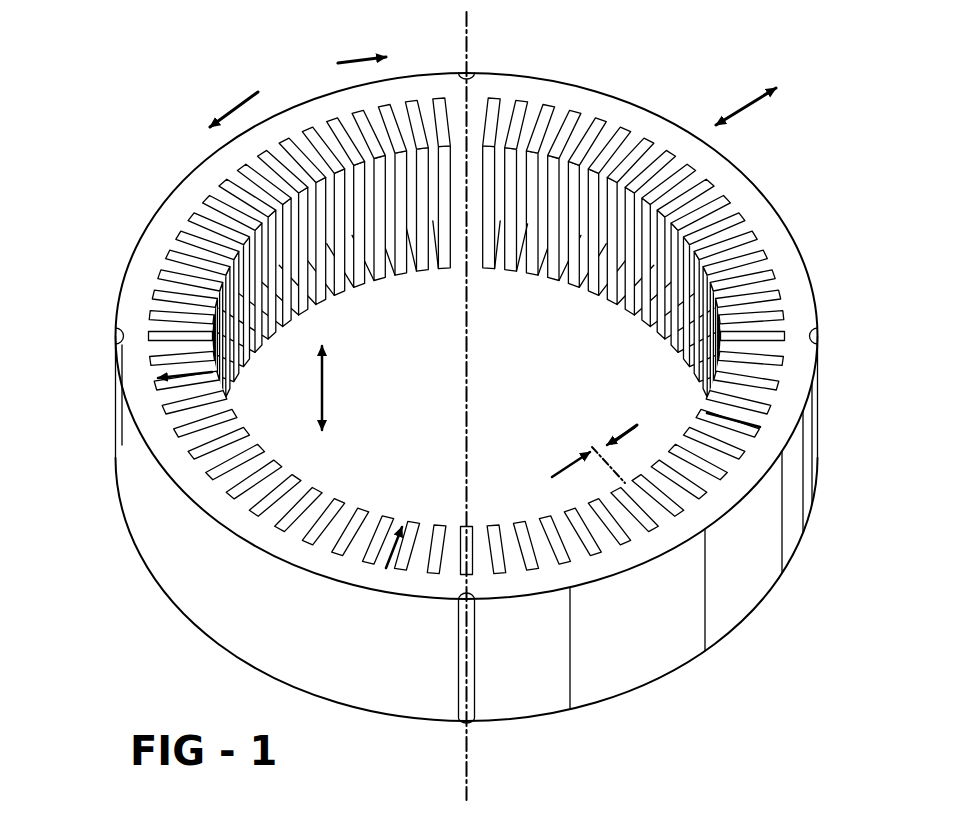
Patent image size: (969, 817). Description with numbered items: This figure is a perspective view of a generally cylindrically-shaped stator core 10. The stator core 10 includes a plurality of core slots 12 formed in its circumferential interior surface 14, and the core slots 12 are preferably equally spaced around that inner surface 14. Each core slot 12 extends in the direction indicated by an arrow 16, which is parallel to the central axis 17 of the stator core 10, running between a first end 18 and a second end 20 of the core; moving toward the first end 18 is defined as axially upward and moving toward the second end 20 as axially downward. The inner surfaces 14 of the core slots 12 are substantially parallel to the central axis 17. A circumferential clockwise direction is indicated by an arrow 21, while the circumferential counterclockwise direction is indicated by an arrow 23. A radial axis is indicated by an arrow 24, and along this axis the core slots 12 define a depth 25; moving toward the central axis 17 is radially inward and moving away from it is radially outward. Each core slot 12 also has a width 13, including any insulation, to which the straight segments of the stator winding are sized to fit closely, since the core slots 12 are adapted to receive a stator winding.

The stator core 10 is at (458, 403).
The core slots 12 is at (163, 250).
The width 13 is at (628, 427).
The circumferential interior surface 14 is at (170, 412).
The arrow 16 is at (332, 377).
The central axis 17 is at (480, 770).
The first end 18 is at (655, 128).
The second end 20 is at (703, 658).
The arrow 21 is at (340, 62).
The arrow 23 is at (246, 96).
The arrow 24 is at (760, 92).
The depth 25 is at (183, 372).